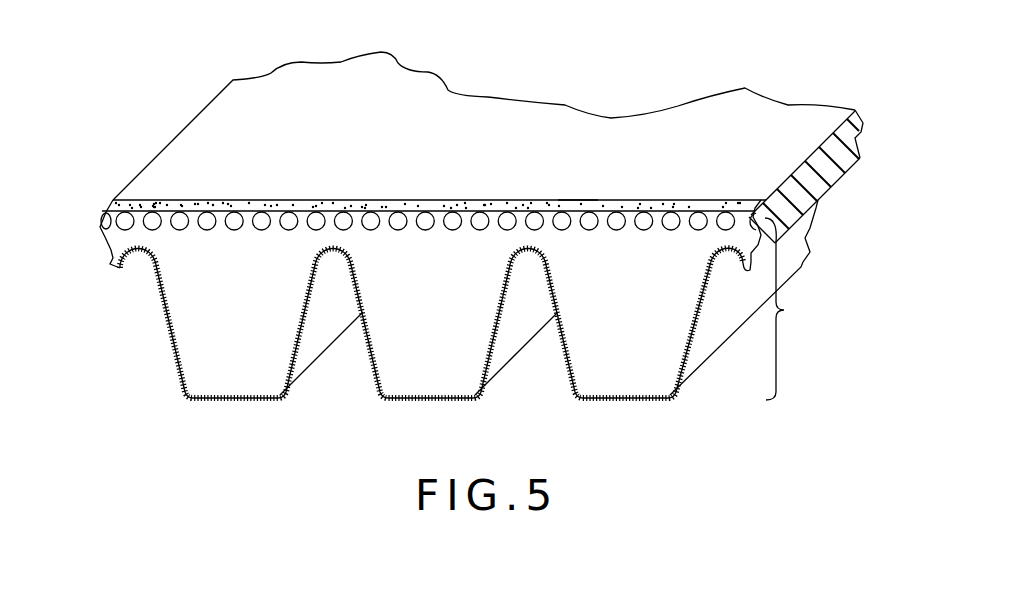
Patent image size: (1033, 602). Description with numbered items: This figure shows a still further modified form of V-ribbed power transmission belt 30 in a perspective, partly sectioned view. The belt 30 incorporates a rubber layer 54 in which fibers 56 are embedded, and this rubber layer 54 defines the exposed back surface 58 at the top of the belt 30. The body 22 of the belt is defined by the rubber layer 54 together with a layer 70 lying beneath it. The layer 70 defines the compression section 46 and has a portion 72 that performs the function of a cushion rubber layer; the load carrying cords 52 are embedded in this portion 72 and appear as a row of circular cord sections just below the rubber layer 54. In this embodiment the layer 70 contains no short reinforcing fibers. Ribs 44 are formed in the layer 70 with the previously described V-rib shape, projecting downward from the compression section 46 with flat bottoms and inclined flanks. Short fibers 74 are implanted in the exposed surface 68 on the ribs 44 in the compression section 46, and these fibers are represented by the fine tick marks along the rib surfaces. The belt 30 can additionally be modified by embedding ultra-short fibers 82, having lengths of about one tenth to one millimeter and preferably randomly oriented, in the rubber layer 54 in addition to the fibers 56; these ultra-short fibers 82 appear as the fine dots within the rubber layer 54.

The body 22 is at (600, 143).
The power transmission belt 30 is at (303, 168).
The ribs 44 is at (237, 403).
The compression section 46 is at (798, 309).
The load carrying cords 52 is at (320, 220).
The rubber layer 54 is at (413, 200).
The fibers 56 is at (577, 200).
The exposed back surface 58 is at (513, 143).
The exposed surface 68 is at (317, 328).
The layer 70 is at (156, 308).
The portion 72 is at (150, 190).
The short fibers 74 is at (176, 344).
The ultra-short fibers 82 is at (228, 199).